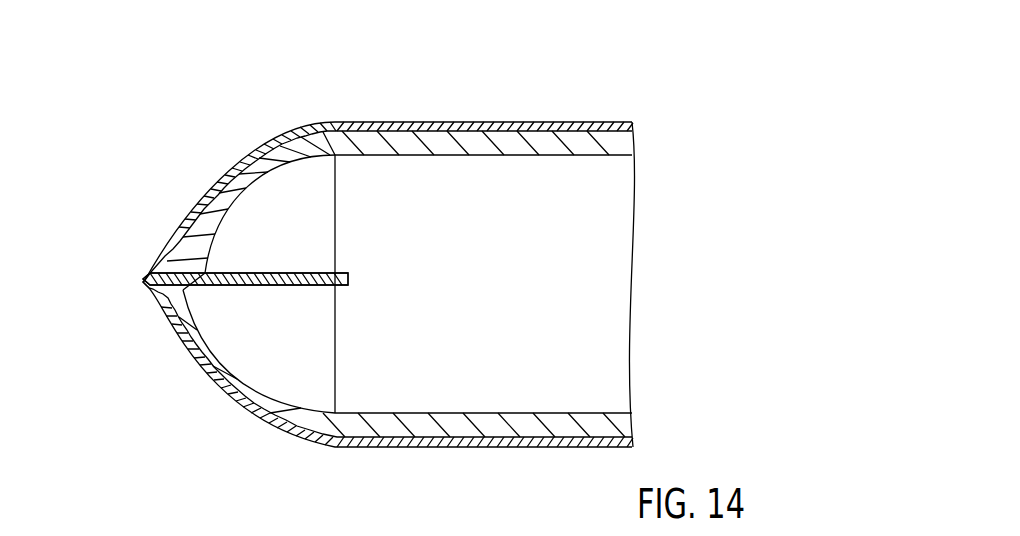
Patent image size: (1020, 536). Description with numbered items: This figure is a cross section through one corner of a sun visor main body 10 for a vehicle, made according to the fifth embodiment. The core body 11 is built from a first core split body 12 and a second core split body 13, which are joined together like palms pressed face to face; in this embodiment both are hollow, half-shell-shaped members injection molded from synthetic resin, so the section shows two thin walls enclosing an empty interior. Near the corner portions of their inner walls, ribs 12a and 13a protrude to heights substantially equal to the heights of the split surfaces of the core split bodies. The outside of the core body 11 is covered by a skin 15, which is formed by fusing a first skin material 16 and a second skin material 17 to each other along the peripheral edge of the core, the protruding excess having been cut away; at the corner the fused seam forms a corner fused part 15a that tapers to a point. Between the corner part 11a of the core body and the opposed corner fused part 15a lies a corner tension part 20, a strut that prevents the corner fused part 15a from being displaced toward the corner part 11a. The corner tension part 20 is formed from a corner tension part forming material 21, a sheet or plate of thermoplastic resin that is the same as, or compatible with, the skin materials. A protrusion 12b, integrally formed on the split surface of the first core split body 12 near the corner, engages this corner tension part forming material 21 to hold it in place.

The sun visor main body 10 is at (613, 110).
The core body 11 is at (718, 238).
The corner part 11a is at (200, 232).
The first core split body 12 is at (527, 430).
The rib 12a is at (265, 340).
The protrusion 12b is at (165, 268).
The second core split body 13 is at (540, 143).
The rib 13a is at (267, 230).
The skin 15 is at (513, 115).
The corner fused part 15a is at (143, 280).
The first skin material 16 is at (410, 443).
The second skin material 17 is at (348, 122).
The corner tension part 20 is at (160, 288).
The corner tension part forming material 21 is at (195, 312).